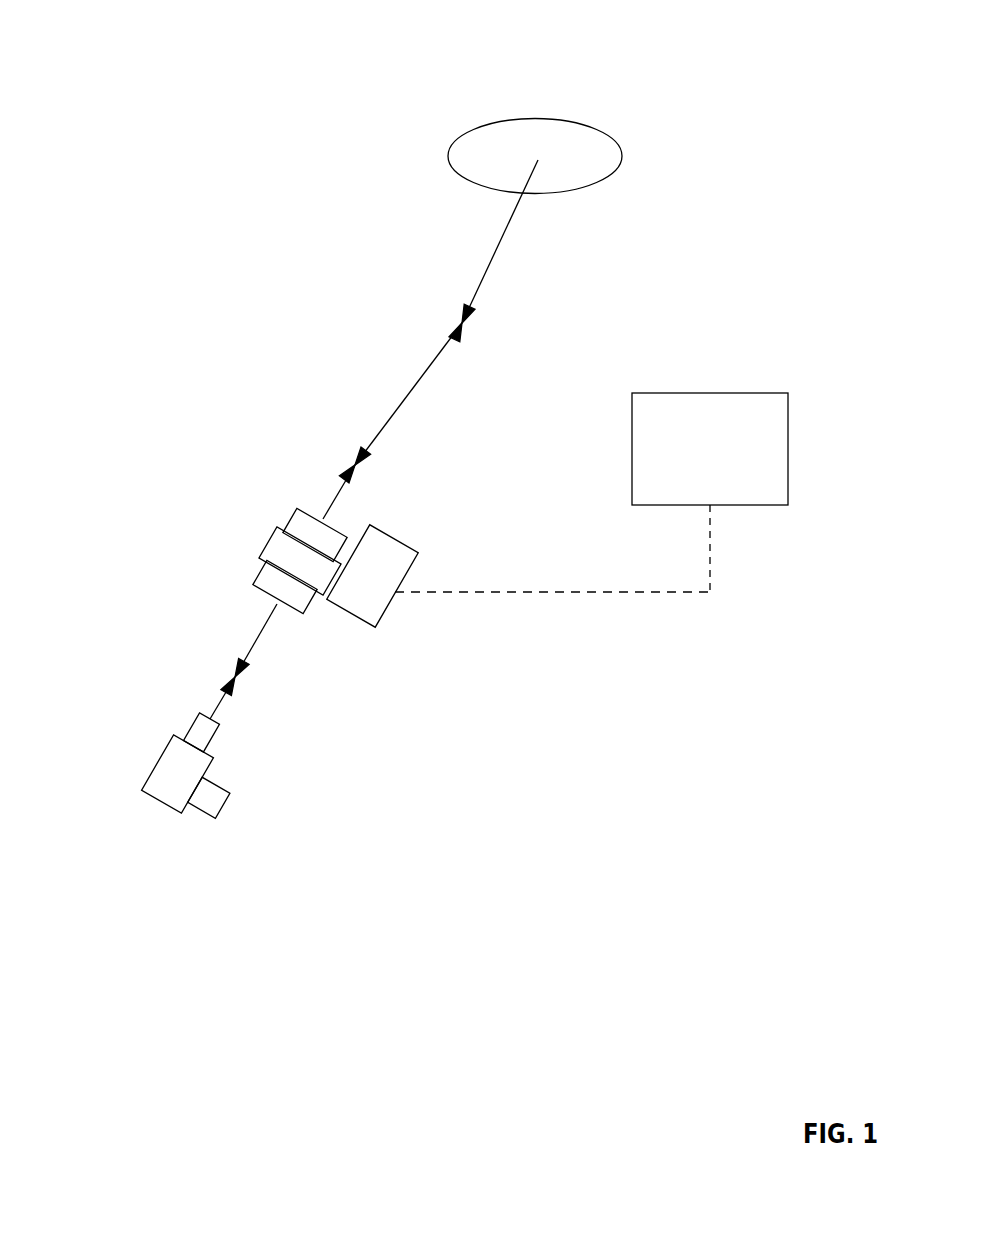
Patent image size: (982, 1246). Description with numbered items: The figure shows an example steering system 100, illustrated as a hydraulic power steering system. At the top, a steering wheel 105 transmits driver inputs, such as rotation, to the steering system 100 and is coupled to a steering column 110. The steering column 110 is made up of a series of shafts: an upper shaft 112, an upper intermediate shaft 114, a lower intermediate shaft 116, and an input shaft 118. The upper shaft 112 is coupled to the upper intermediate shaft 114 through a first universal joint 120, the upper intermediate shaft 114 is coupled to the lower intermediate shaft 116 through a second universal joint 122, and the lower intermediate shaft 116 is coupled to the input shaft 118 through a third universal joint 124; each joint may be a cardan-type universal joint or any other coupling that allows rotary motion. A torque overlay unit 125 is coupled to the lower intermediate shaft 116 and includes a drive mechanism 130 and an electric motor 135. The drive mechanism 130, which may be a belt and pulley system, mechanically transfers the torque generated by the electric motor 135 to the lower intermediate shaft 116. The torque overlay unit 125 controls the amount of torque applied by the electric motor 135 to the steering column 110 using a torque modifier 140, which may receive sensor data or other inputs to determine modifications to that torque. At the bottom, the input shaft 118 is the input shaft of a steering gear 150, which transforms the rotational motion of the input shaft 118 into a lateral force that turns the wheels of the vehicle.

The steering system 100 is at (120, 93).
The steering wheel 105 is at (463, 132).
The steering column 110 is at (340, 272).
The upper shaft 112 is at (490, 268).
The upper intermediate shaft 114 is at (402, 403).
The lower intermediate shaft 116 is at (257, 640).
The input shaft 118 is at (220, 702).
The first universal joint 120 is at (465, 325).
The second universal joint 122 is at (348, 465).
The third universal joint 124 is at (233, 673).
The torque overlay unit 125 is at (380, 662).
The drive mechanism 130 is at (267, 542).
The electric motor 135 is at (395, 542).
The torque modifier 140 is at (767, 506).
The steering gear 150 is at (172, 775).